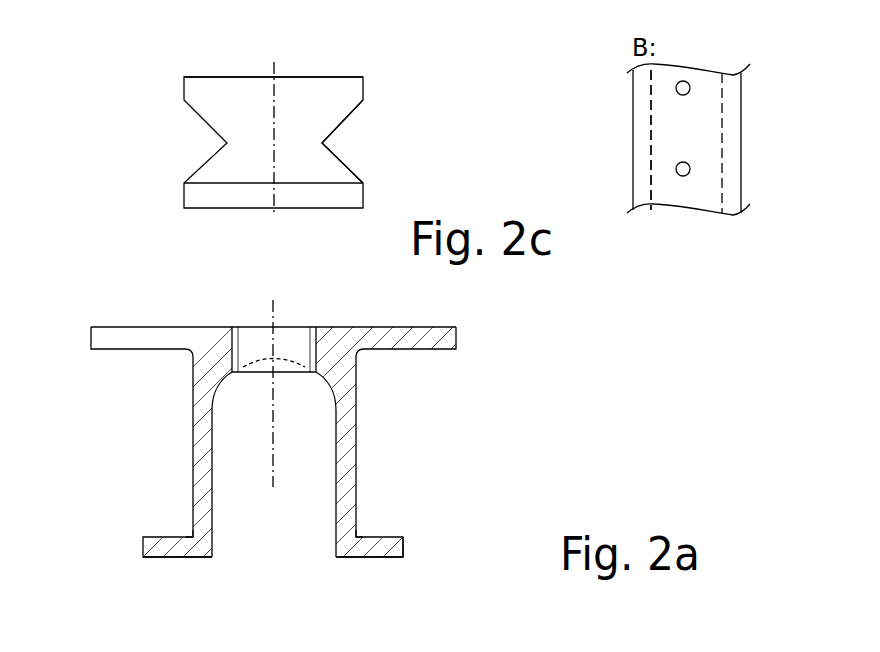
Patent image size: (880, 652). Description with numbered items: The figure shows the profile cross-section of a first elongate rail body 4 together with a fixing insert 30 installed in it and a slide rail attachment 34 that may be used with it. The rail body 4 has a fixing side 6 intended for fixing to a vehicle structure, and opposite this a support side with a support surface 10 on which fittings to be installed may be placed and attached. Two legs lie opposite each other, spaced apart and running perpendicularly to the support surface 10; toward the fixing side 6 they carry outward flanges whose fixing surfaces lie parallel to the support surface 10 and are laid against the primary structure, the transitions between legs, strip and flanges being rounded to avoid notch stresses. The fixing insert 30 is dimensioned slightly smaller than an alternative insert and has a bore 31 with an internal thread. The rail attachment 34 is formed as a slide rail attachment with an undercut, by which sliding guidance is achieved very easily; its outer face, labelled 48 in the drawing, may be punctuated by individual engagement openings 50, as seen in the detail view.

In FIG. 2a, the rail body 4 is at (101, 292).
In FIG. 2a, the fixing side 6 is at (440, 543).
In FIG. 2a, the support surface 10 is at (155, 326).
In FIG. 2a, the fixing insert 30 is at (288, 364).
In FIG. 2a, the bore 31 is at (292, 335).
In FIG. 2c, the rail attachment 34 is at (350, 85).
In FIG. 2c, the top face 48 is at (216, 68).
In FIG. 2c, the engagement openings 50 is at (690, 87).